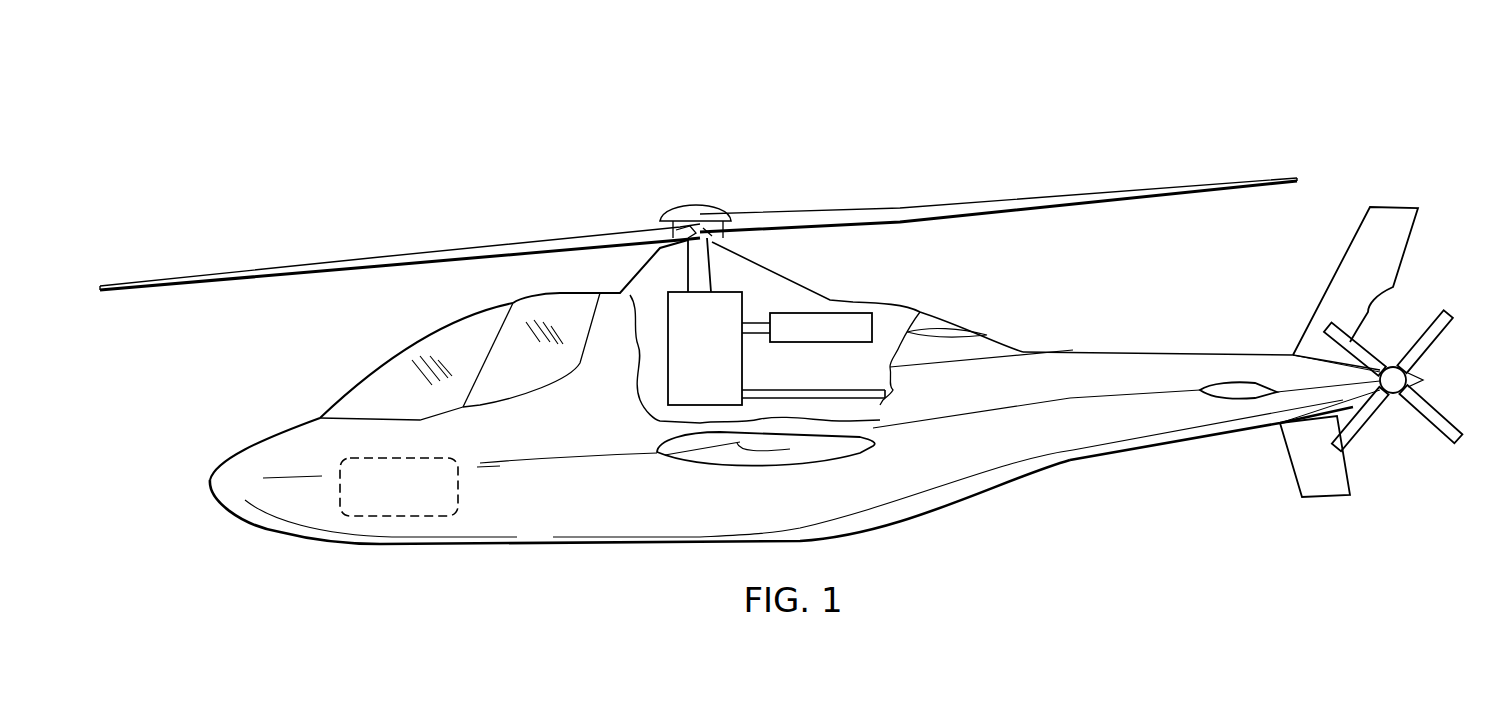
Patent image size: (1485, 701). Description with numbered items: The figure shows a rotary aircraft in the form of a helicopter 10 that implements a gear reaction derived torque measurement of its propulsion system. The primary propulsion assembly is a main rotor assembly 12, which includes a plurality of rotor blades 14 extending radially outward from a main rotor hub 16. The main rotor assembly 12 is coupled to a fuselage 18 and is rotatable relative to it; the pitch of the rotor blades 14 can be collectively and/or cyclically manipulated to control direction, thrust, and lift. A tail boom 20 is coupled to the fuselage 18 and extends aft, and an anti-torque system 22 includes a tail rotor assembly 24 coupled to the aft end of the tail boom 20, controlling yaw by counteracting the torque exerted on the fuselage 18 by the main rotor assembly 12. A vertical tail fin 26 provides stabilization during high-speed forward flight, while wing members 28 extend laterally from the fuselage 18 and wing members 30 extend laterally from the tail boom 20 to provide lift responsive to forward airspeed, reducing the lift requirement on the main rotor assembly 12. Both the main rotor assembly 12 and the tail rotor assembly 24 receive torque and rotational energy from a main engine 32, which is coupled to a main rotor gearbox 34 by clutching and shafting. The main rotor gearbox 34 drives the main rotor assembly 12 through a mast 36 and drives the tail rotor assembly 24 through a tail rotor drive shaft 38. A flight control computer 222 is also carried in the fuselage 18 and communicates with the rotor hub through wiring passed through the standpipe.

The helicopter 10 is at (1063, 100).
The main rotor assembly 12 is at (904, 207).
The rotor blades 14 is at (475, 247).
The main rotor hub 16 is at (697, 207).
The fuselage 18 is at (528, 522).
The tail boom 20 is at (1060, 440).
The anti-torque system 22 is at (1428, 315).
The tail rotor assembly 24 is at (1430, 425).
The vertical tail fin 26 is at (1395, 207).
The wing members 28 is at (727, 468).
The wing members 30 is at (1232, 383).
The main engine 32 is at (853, 312).
The main rotor gearbox 34 is at (667, 377).
The mast 36 is at (693, 278).
The tail rotor drive shaft 38 is at (868, 402).
The flight control computer 222 is at (388, 517).